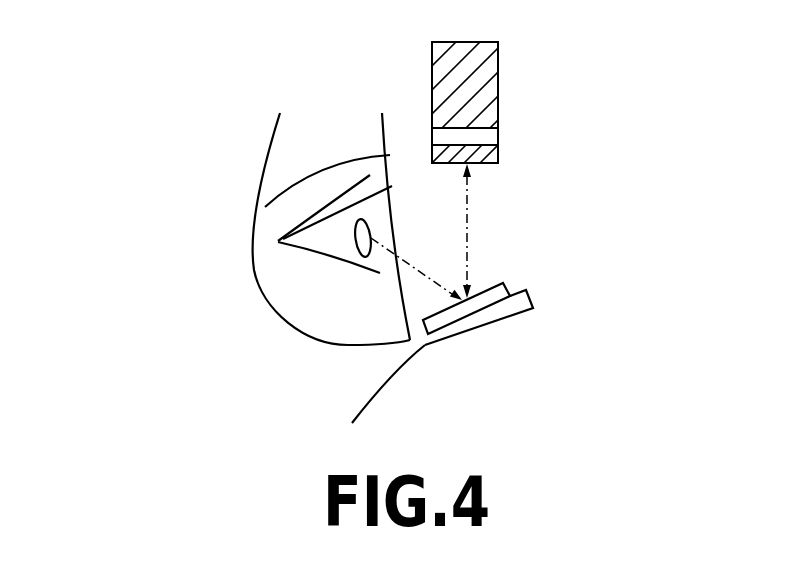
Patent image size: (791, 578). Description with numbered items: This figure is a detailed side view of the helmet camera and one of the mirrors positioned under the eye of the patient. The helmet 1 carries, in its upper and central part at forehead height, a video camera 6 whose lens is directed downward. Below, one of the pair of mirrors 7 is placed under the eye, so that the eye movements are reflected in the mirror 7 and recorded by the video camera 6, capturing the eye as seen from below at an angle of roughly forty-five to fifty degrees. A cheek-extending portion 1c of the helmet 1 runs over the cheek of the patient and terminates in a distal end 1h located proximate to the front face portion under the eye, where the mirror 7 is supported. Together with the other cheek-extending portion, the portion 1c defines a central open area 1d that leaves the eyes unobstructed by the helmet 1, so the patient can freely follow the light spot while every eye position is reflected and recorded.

The helmet 1 is at (330, 376).
The cheek-extending portion 1c is at (428, 347).
The central open area 1d is at (502, 214).
The distal end 1h is at (515, 307).
The video camera 6 is at (470, 87).
The mirror 7 is at (480, 302).